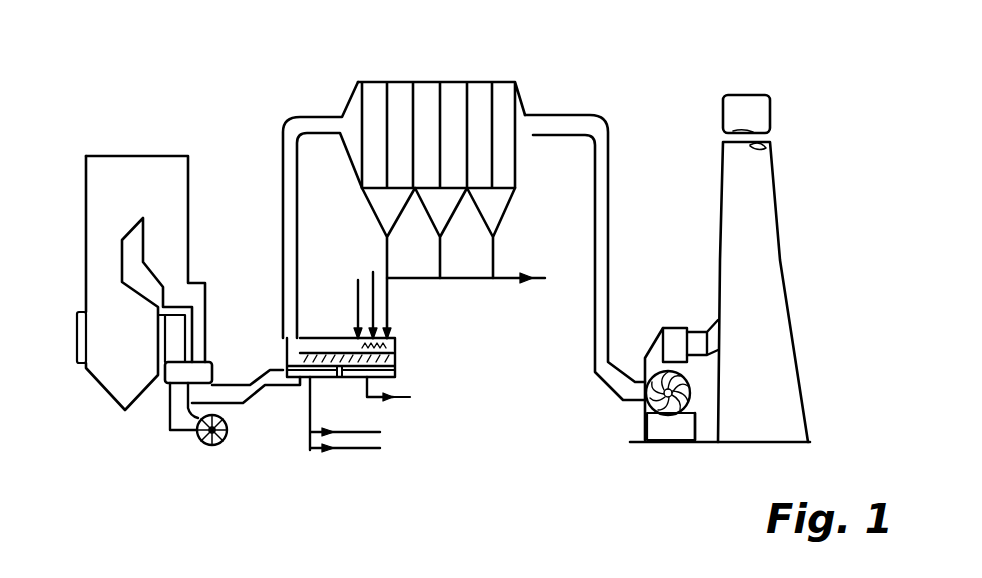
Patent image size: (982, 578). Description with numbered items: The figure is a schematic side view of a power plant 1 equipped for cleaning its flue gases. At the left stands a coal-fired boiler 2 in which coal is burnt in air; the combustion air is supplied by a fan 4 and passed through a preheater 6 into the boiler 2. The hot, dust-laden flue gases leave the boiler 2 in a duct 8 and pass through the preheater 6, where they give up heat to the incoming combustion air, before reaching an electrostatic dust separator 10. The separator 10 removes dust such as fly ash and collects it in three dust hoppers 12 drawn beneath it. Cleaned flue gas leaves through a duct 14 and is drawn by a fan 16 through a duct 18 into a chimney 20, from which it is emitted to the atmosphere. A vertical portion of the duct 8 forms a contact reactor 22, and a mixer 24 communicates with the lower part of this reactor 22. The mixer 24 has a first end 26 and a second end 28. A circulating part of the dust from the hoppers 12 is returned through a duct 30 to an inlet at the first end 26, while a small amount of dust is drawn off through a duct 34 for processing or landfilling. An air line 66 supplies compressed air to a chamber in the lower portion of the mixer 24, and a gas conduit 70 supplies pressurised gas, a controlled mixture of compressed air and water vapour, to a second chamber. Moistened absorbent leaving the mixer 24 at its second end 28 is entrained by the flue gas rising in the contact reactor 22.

The power plant 1 is at (235, 76).
The boiler 2 is at (127, 177).
The fan 4 is at (197, 436).
The preheater 6 is at (157, 383).
The duct 8 is at (237, 396).
The electrostatic dust separator 10 is at (455, 95).
The dust hoppers 12 is at (380, 207).
The duct 14 is at (604, 212).
The fan 16 is at (645, 413).
The duct 18 is at (678, 322).
The chimney 20 is at (757, 232).
The contact reactor 22 is at (283, 210).
The mixer 24 is at (331, 326).
The first end 26 is at (393, 348).
The second end 28 is at (283, 348).
The duct 30 is at (388, 297).
The duct 34 is at (528, 279).
The air line 66 is at (410, 398).
The gas conduit 70 is at (308, 407).